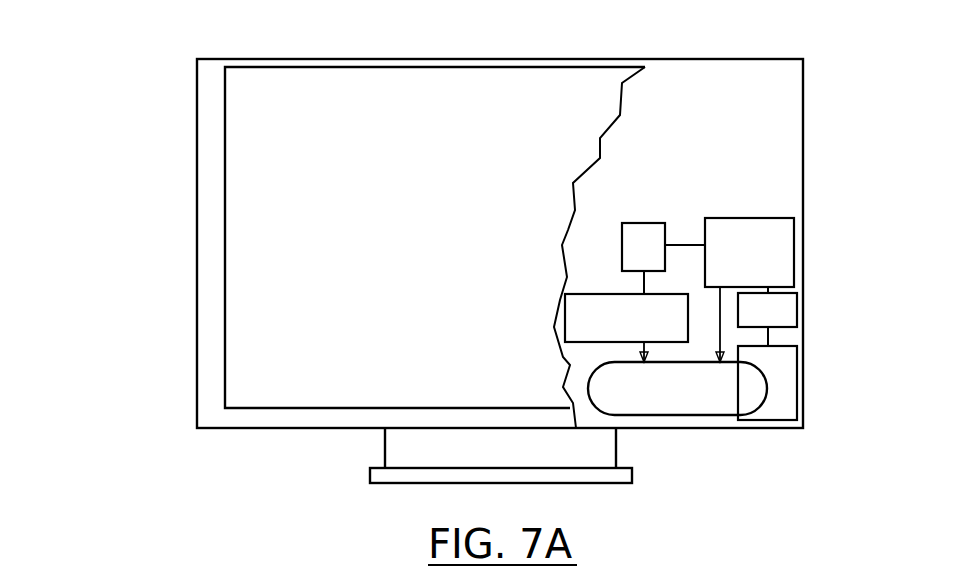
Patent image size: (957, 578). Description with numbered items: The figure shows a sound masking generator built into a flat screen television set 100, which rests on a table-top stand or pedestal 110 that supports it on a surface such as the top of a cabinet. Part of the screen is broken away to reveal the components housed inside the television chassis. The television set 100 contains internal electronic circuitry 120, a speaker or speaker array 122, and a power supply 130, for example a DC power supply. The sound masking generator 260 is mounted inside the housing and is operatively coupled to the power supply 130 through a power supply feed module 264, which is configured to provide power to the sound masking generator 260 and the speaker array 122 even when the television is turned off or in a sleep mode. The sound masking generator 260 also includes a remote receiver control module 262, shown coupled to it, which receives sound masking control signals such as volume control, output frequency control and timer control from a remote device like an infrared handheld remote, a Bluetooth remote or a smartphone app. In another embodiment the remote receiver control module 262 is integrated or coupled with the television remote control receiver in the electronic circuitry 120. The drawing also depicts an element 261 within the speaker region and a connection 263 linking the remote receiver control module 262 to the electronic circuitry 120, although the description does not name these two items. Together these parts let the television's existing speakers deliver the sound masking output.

The television set 100 is at (167, 255).
The table-top stand 110 is at (385, 450).
The electronic circuitry 120 is at (648, 333).
The speaker array 122 is at (677, 431).
The power supply 130 is at (797, 393).
The sound masking generator 260 is at (742, 218).
The light emitting unit 261 is at (677, 388).
The remote receiver control module 262 is at (645, 223).
The connection line 263 is at (643, 283).
The power supply feed module 264 is at (797, 306).